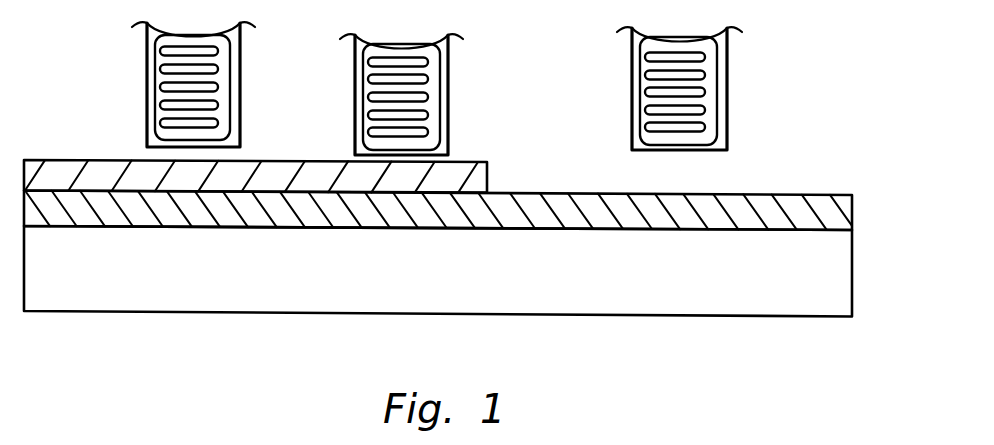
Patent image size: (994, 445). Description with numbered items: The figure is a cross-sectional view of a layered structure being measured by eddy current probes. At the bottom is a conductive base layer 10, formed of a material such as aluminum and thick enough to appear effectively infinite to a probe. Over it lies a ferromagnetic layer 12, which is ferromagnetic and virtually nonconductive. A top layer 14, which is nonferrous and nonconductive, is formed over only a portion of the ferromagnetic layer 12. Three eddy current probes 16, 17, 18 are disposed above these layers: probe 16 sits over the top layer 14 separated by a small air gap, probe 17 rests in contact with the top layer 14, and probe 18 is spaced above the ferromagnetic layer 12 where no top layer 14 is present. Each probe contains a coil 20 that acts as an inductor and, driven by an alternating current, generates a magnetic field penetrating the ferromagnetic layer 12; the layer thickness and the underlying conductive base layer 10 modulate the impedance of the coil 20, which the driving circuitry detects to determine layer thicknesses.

The conductive base layer 10 is at (455, 284).
The ferromagnetic layer 12 is at (813, 195).
The top layer 14 is at (63, 160).
The eddy current probe 16 is at (240, 98).
The eddy current probe 17 is at (448, 112).
The eddy current probe 18 is at (727, 103).
The coil 20 is at (147, 98).